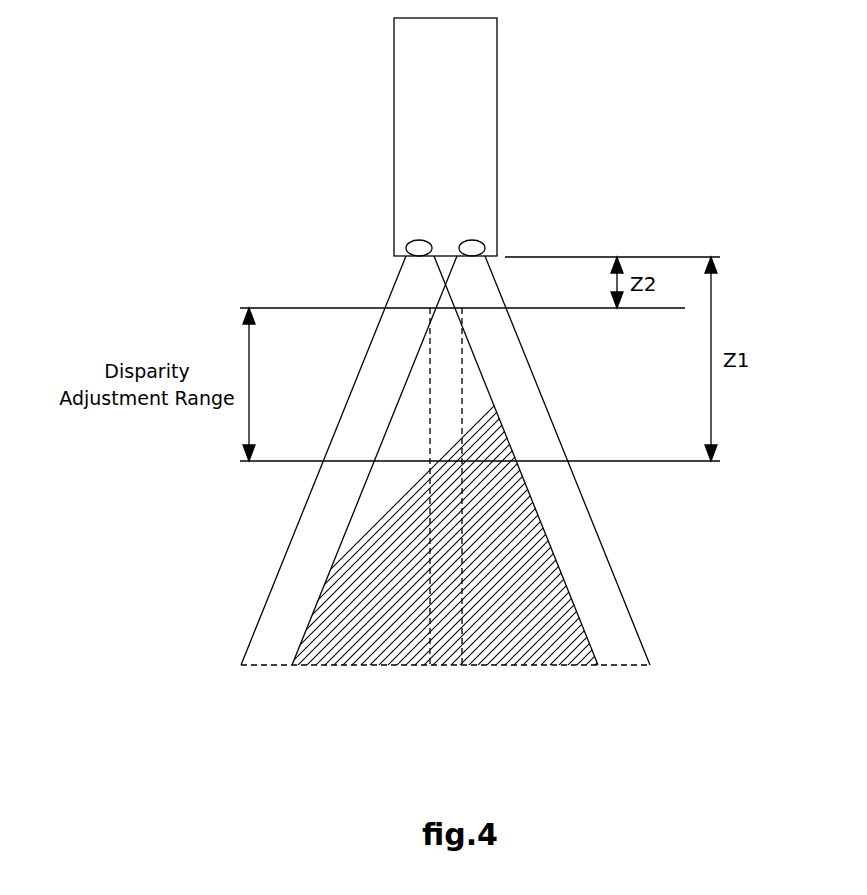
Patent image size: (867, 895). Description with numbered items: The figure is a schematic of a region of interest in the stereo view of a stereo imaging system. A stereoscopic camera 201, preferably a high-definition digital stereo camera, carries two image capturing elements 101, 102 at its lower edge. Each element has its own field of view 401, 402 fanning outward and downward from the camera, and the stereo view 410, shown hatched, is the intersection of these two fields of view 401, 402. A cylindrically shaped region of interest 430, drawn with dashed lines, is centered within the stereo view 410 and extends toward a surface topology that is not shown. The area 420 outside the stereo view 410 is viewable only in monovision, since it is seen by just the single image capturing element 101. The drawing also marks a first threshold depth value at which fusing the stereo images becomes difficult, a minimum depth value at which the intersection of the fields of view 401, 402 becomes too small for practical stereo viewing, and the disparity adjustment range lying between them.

The stereoscopic camera 201 is at (498, 90).
The image capturing element 101 is at (420, 240).
The image capturing element 102 is at (473, 240).
The field of view 401 is at (263, 607).
The field of view 402 is at (338, 550).
The stereo view 410 is at (368, 653).
The area outside the stereo view 420 is at (265, 653).
The region of interest 430 is at (446, 653).